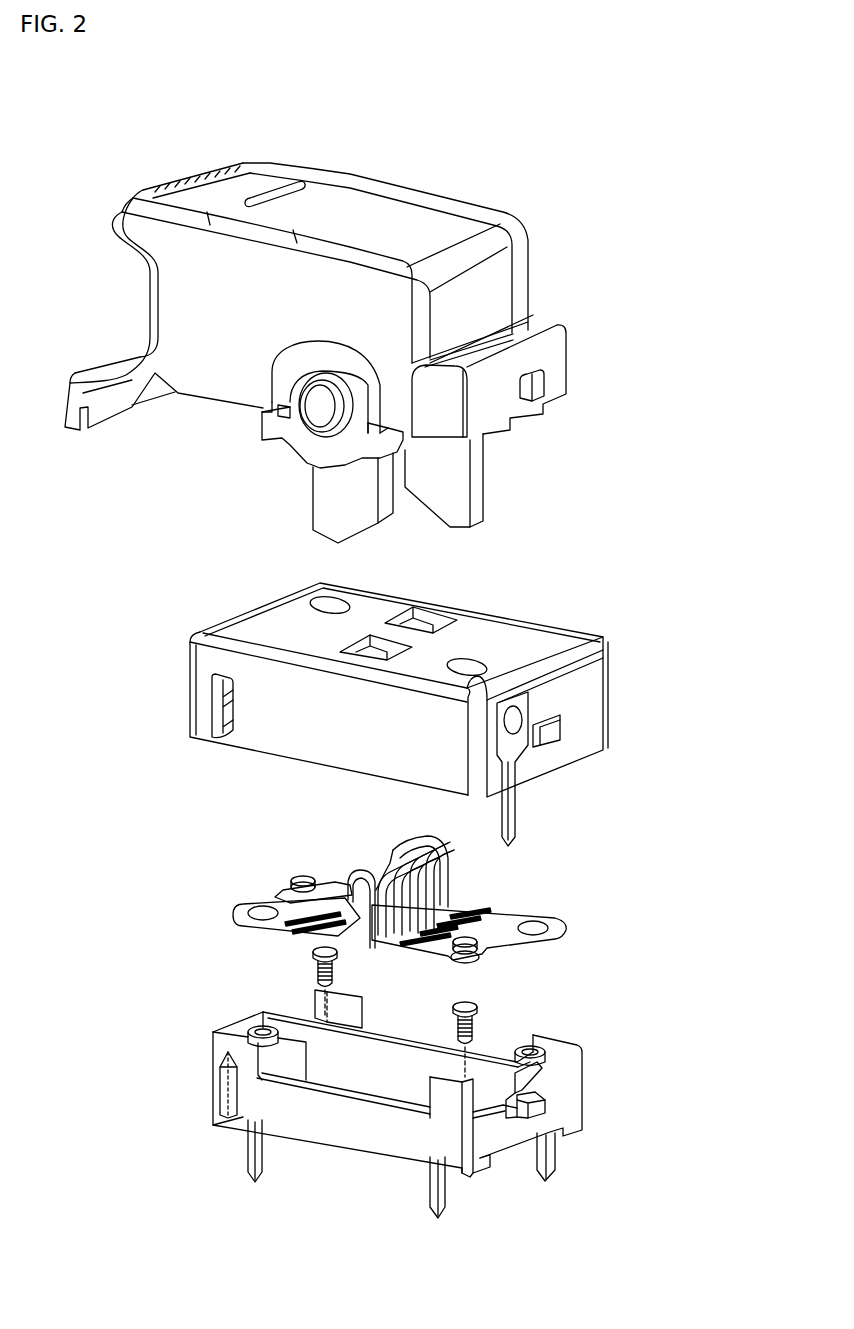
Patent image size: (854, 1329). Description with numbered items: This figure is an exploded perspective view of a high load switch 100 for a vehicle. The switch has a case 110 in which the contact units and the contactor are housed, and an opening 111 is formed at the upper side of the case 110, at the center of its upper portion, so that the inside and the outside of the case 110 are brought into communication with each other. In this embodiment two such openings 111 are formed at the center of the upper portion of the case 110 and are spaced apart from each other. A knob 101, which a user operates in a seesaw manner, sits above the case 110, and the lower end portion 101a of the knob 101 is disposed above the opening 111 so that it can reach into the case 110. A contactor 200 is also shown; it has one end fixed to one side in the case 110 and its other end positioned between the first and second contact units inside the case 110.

The high load switch 100 is at (621, 269).
The knob 101 is at (437, 219).
The lower end portion 101a is at (335, 497).
The case 110 is at (518, 642).
The opening 111 is at (435, 620).
The contactor 200 is at (377, 872).